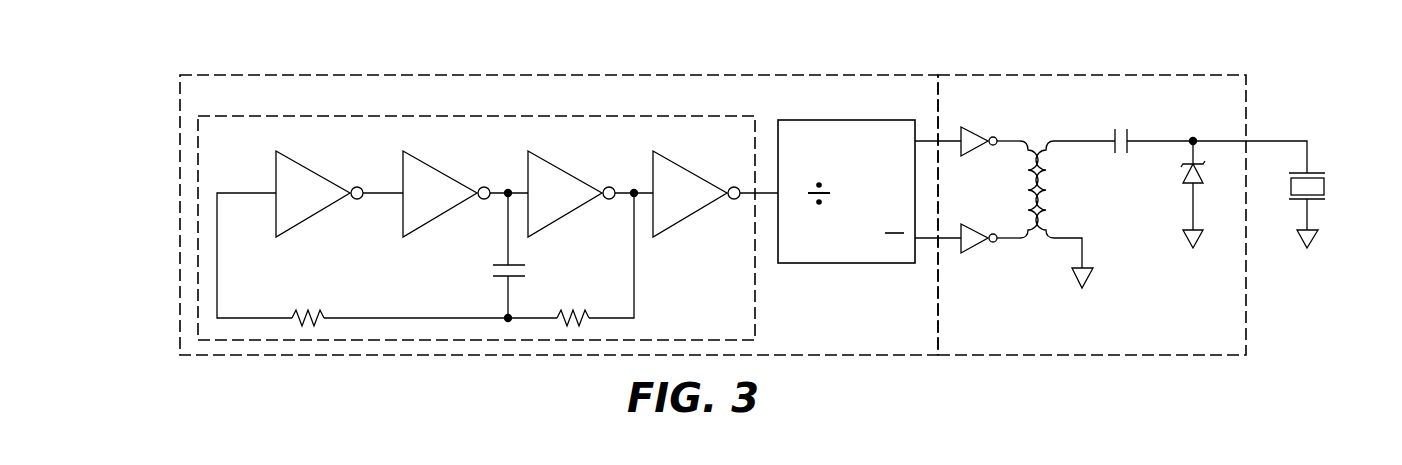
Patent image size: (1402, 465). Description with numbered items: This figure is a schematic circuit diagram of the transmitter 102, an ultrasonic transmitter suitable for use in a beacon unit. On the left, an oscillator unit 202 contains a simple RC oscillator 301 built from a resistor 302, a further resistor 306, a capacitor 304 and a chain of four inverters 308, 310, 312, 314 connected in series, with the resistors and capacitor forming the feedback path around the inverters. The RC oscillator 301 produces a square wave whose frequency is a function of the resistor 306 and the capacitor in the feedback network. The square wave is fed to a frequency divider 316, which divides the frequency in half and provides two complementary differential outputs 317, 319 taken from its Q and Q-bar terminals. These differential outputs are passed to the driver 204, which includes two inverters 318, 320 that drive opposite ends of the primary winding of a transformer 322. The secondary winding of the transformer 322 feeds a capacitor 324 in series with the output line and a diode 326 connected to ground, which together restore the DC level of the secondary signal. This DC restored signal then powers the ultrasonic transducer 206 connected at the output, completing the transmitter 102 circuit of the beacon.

The transmitter 102 is at (713, 187).
The oscillator unit 202 is at (814, 331).
The driver 204 is at (1164, 339).
The ultrasonic transducer 206 is at (1327, 185).
The RC oscillator 301 is at (256, 147).
The resistor 302 is at (317, 312).
The timing capacitor 304 is at (491, 270).
The resistor 306 is at (566, 312).
The inverter 308 is at (318, 204).
The inverter 310 is at (445, 204).
The inverter 312 is at (570, 204).
The inverter 314 is at (695, 204).
The frequency divider 316 is at (836, 254).
The differential output 317 is at (927, 139).
The inverter 318 is at (965, 158).
The differential output 319 is at (925, 241).
The inverter 320 is at (965, 222).
The transformer 322 is at (1037, 241).
The capacitor 324 is at (1120, 155).
The diode 326 is at (1182, 175).